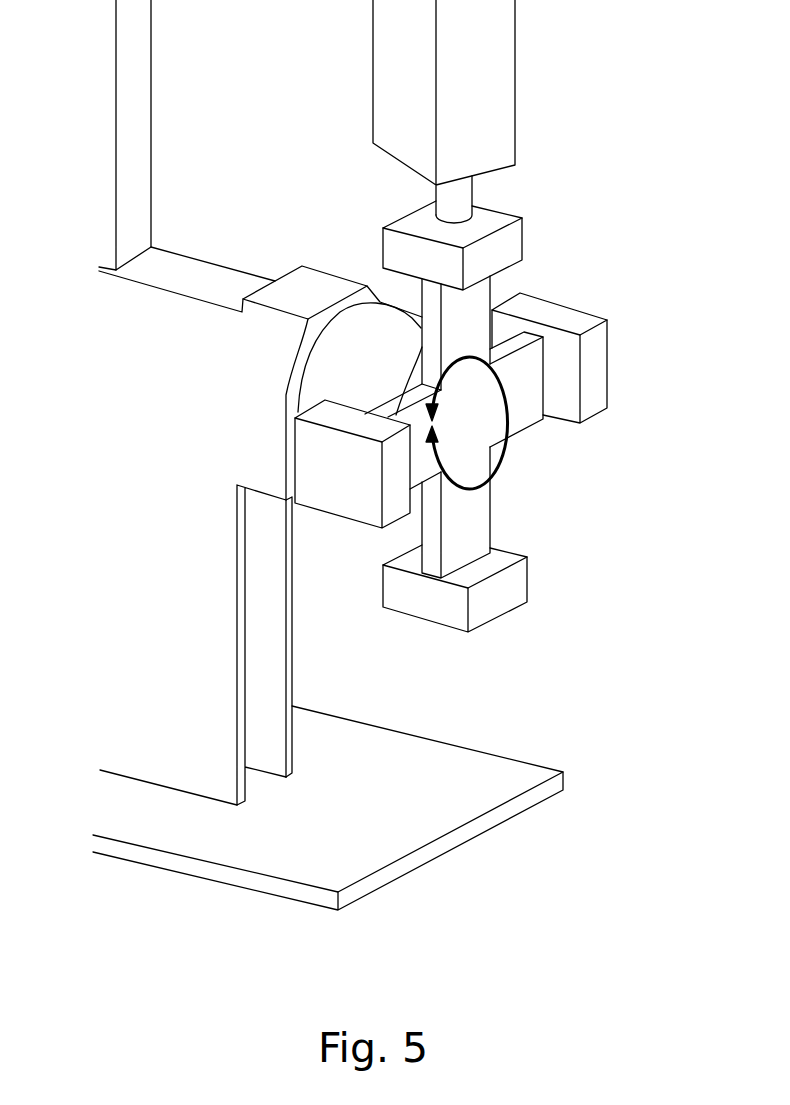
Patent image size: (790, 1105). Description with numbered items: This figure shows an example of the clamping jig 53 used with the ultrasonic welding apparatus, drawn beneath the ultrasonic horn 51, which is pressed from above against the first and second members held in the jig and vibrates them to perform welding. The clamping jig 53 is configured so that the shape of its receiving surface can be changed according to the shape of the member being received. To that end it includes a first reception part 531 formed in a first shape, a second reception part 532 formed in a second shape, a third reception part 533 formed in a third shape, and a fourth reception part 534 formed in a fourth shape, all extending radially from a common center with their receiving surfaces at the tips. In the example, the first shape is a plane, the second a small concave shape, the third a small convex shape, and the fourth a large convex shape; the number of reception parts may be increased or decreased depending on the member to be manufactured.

The ultrasonic horn 51 is at (463, 189).
The clamping jig 53 is at (568, 245).
The first reception part 531 is at (407, 222).
The second reception part 532 is at (587, 318).
The third reception part 533 is at (505, 605).
The fourth reception part 534 is at (345, 513).